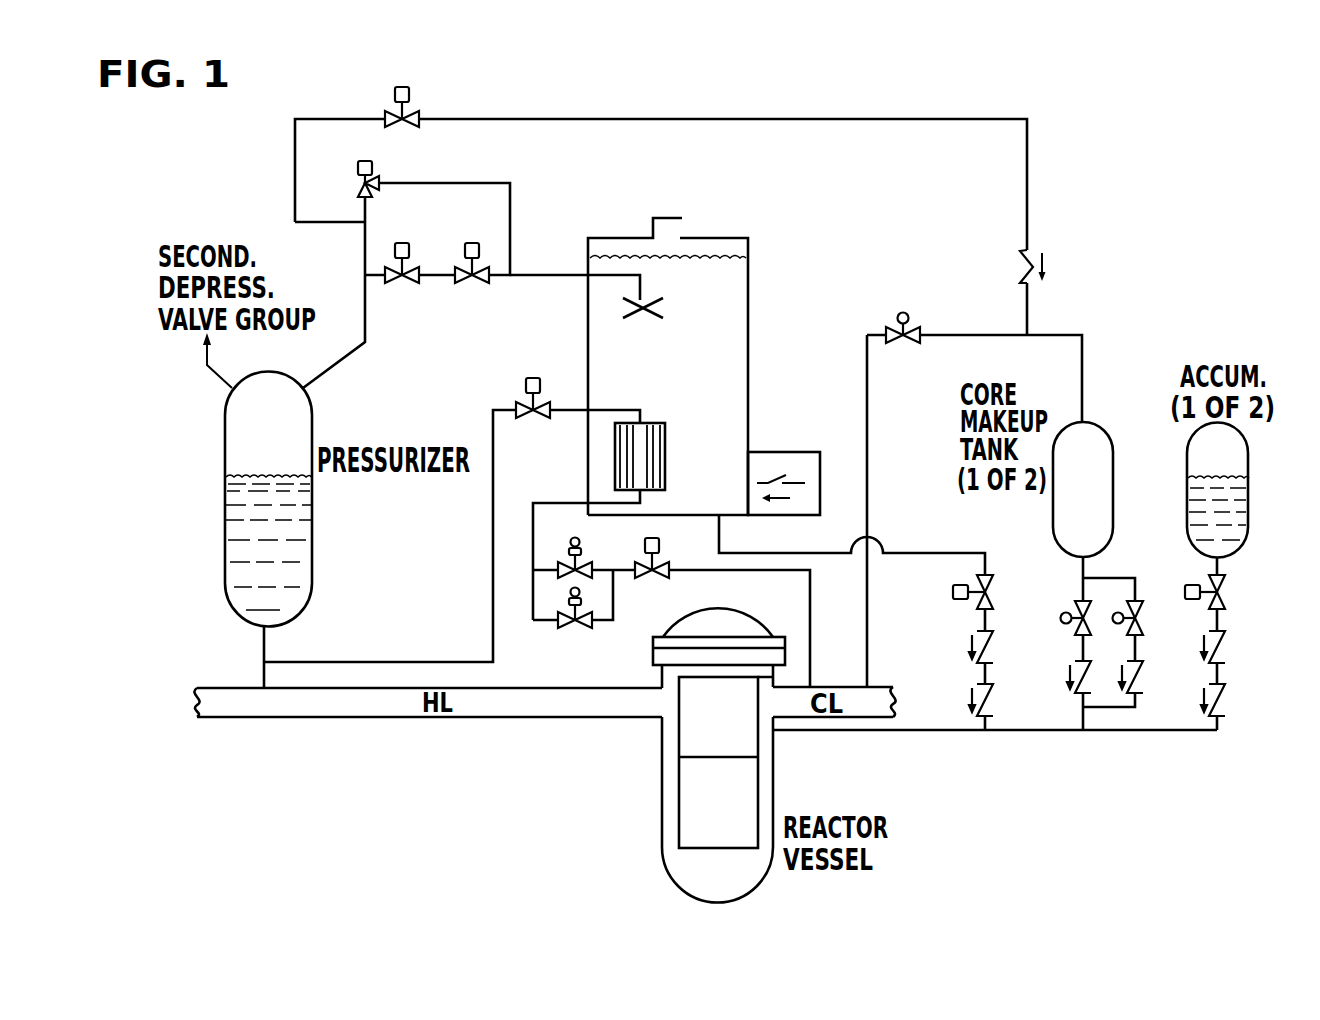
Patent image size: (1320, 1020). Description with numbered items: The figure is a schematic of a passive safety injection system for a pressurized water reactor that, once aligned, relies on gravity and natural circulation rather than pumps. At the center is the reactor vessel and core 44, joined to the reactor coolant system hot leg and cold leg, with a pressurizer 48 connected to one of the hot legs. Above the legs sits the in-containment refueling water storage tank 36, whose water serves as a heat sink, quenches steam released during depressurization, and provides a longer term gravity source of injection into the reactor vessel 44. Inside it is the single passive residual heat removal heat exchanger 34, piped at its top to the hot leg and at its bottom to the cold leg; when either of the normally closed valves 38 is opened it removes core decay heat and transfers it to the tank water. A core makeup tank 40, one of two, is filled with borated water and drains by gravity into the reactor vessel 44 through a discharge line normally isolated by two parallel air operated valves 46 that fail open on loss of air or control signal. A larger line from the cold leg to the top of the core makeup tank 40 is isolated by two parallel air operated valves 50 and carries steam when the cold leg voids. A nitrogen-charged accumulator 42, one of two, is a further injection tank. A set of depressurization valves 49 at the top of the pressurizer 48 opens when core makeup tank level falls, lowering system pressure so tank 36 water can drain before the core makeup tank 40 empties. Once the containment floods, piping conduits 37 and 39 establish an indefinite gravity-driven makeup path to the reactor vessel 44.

The passive residual heat removal heat exchanger 34 is at (657, 423).
The in-containment refueling water storage tank 36 is at (748, 283).
The piping conduit 37 is at (797, 452).
The normally closed valves 38 is at (572, 628).
The piping conduit 39 is at (851, 545).
The core makeup tank 40 is at (1097, 425).
The accumulator 42 is at (1187, 492).
The reactor vessel and core 44 is at (773, 783).
The parallel air operated valves 46 is at (1135, 605).
The pressurizer 48 is at (225, 438).
The depressurization valves 49 is at (458, 230).
The parallel air operated valves 50 is at (917, 330).